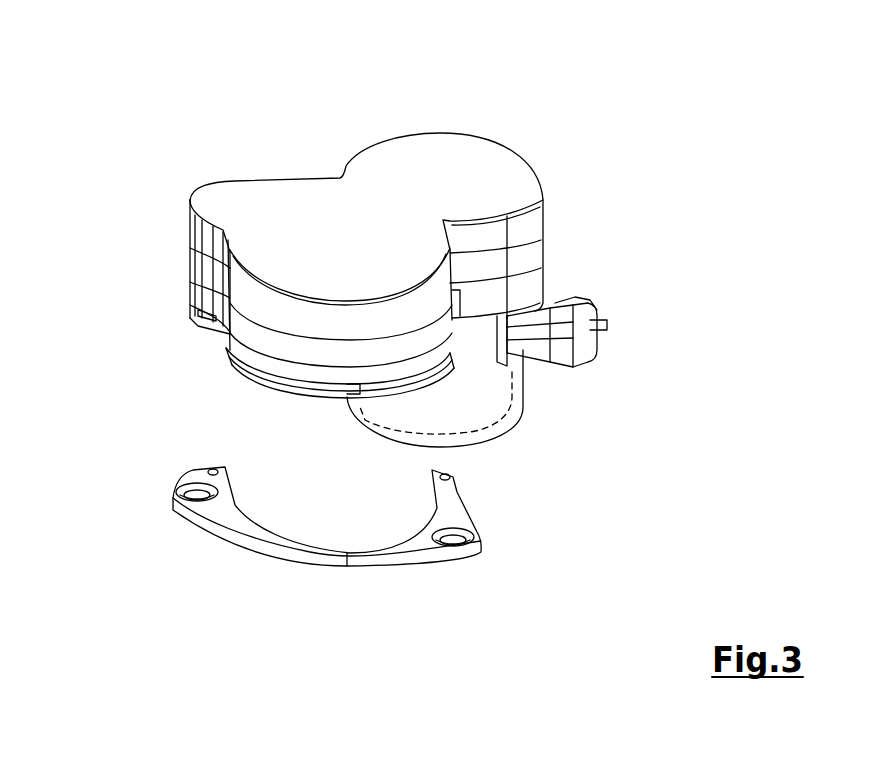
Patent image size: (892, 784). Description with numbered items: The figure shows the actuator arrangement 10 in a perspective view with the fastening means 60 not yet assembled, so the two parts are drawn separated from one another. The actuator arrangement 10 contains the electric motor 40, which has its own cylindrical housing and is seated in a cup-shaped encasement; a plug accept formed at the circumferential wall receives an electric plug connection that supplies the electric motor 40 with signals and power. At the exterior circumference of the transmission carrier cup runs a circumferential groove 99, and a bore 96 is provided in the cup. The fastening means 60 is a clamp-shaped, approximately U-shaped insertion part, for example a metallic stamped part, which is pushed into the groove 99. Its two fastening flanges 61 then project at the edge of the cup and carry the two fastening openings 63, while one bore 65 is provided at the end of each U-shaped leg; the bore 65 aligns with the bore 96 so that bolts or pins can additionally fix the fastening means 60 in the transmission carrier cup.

The actuator arrangement 10 is at (278, 103).
The electric motor 40 is at (498, 407).
The fastening means 60 is at (312, 564).
The fastening flange 61 is at (223, 506).
The fastening opening 63 is at (176, 503).
The bore 65 is at (198, 472).
The bore 96 is at (196, 312).
The groove 99 is at (246, 368).